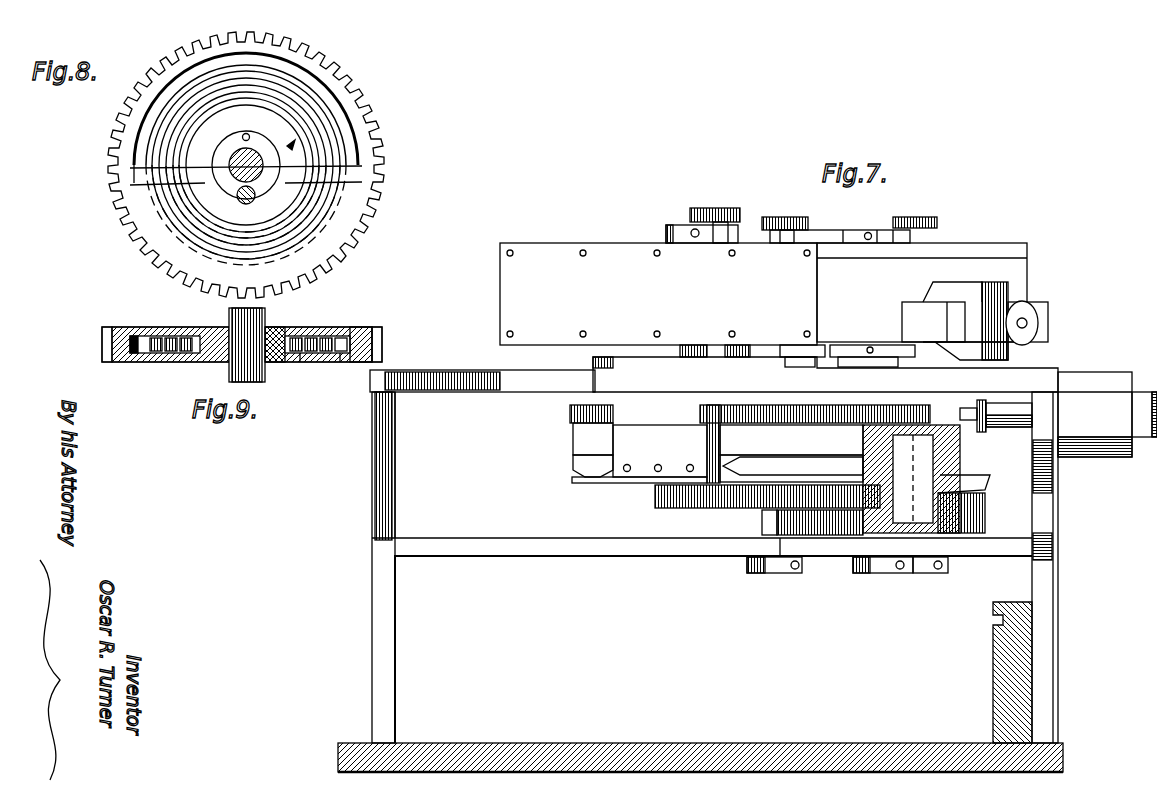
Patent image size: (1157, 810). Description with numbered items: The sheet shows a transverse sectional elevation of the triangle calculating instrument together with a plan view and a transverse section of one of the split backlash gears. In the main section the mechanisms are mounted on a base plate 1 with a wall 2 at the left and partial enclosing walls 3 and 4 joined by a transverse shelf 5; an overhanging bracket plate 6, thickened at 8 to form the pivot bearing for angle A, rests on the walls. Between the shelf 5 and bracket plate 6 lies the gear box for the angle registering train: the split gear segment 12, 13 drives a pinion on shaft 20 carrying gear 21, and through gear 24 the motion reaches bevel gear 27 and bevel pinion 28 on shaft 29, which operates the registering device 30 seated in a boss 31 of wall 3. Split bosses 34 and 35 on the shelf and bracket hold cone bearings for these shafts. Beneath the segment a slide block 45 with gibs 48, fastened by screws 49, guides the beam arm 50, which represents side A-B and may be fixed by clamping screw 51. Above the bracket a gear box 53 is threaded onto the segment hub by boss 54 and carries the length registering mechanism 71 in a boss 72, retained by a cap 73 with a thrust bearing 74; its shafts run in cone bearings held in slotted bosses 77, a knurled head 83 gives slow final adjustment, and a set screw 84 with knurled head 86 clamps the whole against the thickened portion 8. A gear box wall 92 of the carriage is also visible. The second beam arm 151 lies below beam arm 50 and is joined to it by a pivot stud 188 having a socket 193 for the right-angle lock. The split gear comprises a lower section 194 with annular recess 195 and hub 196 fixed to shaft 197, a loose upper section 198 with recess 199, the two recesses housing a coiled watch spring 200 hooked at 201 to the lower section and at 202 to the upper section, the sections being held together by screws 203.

In FIG. 7, the base plate 1 is at (484, 743).
In FIG. 7, the wall 2 is at (440, 542).
In FIG. 7, the wall 3 is at (1032, 575).
In FIG. 7, the wall 4 is at (396, 640).
In FIG. 7, the shelf 5 is at (535, 556).
In FIG. 7, the bracket plate 6 is at (470, 390).
In FIG. 7, the thickened portion 8 is at (825, 374).
In FIG. 7, the gear segment 12 is at (573, 428).
In FIG. 7, the gear segment 13 is at (570, 410).
In FIG. 7, the shaft 20 is at (762, 520).
In FIG. 7, the gear 21 is at (655, 498).
In FIG. 7, the gear 24 is at (825, 556).
In FIG. 7, the bevel gear 27 is at (950, 440).
In FIG. 7, the bevel pinion 28 is at (982, 432).
In FIG. 7, the shaft 29 is at (1020, 427).
In FIG. 7, the registering device 30 is at (1112, 360).
In FIG. 7, the boss 31 is at (1144, 390).
In FIG. 7, the split boss 34 is at (860, 357).
In FIG. 7, the split boss 35 is at (760, 573).
In FIG. 7, the slide block 45 is at (660, 451).
In FIG. 7, the gib 48 is at (791, 456).
In FIG. 7, the screw 49 is at (690, 464).
In FIG. 7, the beam arm 50 is at (573, 462).
In FIG. 7, the clamping screw 51 is at (730, 192).
In FIG. 7, the gear box 53 is at (990, 232).
In FIG. 7, the boss 54 is at (707, 352).
In FIG. 7, the registering mechanism 71 is at (965, 290).
In FIG. 7, the boss 72 is at (905, 315).
In FIG. 7, the cap 73 is at (1030, 302).
In FIG. 7, the thrust bearing 74 is at (1027, 323).
In FIG. 7, the slotted boss 77 is at (670, 230).
In FIG. 7, the knurled head 83 is at (925, 217).
In FIG. 7, the set screw 84 is at (790, 352).
In FIG. 7, the knurled head 86 is at (800, 203).
In FIG. 7, the gear box wall 92 is at (993, 640).
In FIG. 7, the beam arm 151 is at (985, 507).
In FIG. 7, the pivot stud 188 is at (905, 573).
In FIG. 7, the socket 193 is at (870, 573).
In FIG. 8, the lower section 194 is at (360, 118).
In FIG. 9, the lower section 194 is at (382, 345).
In FIG. 8, the annular recess 195 is at (345, 150).
In FIG. 9, the annular recess 195 is at (342, 362).
In FIG. 8, the hub 196 is at (240, 170).
In FIG. 9, the hub 196 is at (275, 320).
In FIG. 8, the shaft 197 is at (255, 178).
In FIG. 9, the shaft 197 is at (228, 320).
In FIG. 8, the upper section 198 is at (355, 208).
In FIG. 9, the upper section 198 is at (362, 330).
In FIG. 9, the annular recess 199 is at (345, 340).
In FIG. 8, the coiled watch spring 200 is at (335, 128).
In FIG. 9, the coiled watch spring 200 is at (300, 360).
In FIG. 8, the hook 201 is at (292, 148).
In FIG. 9, the hook 201 is at (300, 336).
In FIG. 8, the hook 202 is at (138, 140).
In FIG. 9, the hook 202 is at (135, 345).
In FIG. 8, the screw 203 is at (290, 175).